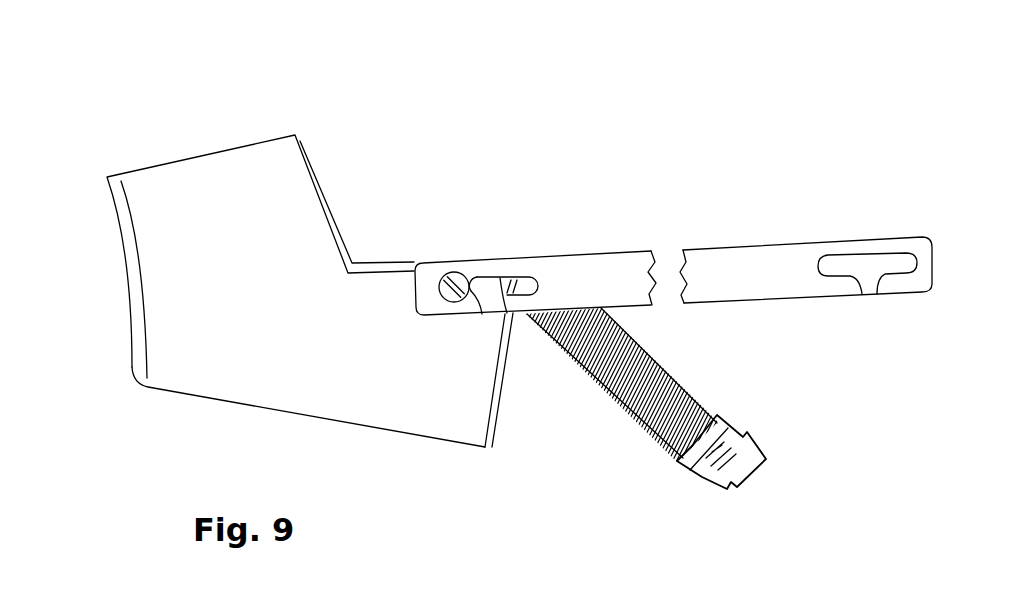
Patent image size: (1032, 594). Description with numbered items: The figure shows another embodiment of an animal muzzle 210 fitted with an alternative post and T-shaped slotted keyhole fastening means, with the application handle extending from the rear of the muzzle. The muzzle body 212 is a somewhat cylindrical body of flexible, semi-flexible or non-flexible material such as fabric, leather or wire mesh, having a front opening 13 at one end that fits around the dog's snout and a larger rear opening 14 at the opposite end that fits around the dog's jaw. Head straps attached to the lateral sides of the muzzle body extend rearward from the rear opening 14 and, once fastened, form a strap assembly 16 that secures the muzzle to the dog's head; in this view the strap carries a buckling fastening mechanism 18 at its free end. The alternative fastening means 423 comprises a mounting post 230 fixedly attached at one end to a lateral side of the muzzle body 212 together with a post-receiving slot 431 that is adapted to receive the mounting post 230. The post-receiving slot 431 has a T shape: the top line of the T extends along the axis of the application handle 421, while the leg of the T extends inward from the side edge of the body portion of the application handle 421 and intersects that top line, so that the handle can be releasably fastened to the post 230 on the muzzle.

The front opening 13 is at (110, 288).
The rear opening 14 is at (507, 398).
The strap assembly 16 is at (637, 403).
The buckling fastening mechanism 18 is at (730, 482).
The muzzle 210 is at (258, 85).
The muzzle body 212 is at (297, 357).
The mounting post 230 is at (448, 271).
The application handle 421 is at (707, 263).
The alternative fastening means 423 is at (470, 218).
The post-receiving slot 431 is at (501, 277).